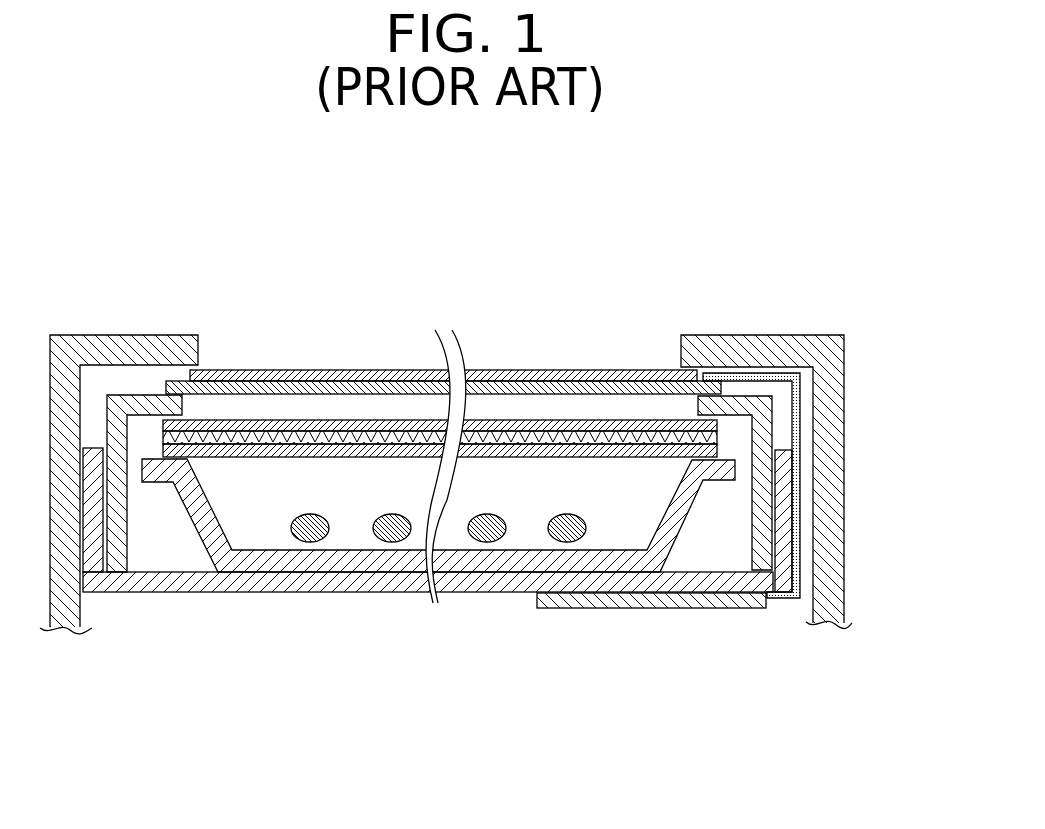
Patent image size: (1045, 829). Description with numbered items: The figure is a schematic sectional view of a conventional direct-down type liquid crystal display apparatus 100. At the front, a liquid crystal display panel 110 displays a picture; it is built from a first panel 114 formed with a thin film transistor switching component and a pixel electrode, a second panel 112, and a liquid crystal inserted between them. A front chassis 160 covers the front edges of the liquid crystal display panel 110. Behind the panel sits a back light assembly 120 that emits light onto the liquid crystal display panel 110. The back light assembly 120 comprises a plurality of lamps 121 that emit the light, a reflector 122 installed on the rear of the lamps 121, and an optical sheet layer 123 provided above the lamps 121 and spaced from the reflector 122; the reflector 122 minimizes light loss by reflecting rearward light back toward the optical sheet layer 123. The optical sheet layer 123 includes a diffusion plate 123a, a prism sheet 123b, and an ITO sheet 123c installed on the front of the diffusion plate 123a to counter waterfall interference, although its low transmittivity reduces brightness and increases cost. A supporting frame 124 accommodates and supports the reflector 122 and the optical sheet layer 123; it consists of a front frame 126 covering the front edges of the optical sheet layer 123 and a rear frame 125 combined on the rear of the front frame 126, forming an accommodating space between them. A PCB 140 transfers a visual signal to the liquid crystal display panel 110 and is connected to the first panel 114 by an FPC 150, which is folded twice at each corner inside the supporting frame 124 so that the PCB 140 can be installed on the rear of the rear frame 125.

The liquid crystal display apparatus 100 is at (586, 219).
The liquid crystal display panel 110 is at (443, 304).
The second panel 112 is at (300, 378).
The first panel 114 is at (372, 392).
The back light assembly 120 is at (437, 600).
The lamp 121 is at (565, 541).
The reflector 122 is at (250, 573).
The optical sheet layer 123 is at (449, 574).
The diffusion plate 123a is at (595, 457).
The prism sheet 123b is at (660, 457).
The ITO sheet 123c is at (707, 458).
The supporting frame 124 is at (437, 588).
The rear frame 125 is at (177, 582).
The front frame 126 is at (123, 572).
The PCB 140 is at (757, 608).
The FPC 150 is at (797, 450).
The front chassis 160 is at (819, 350).